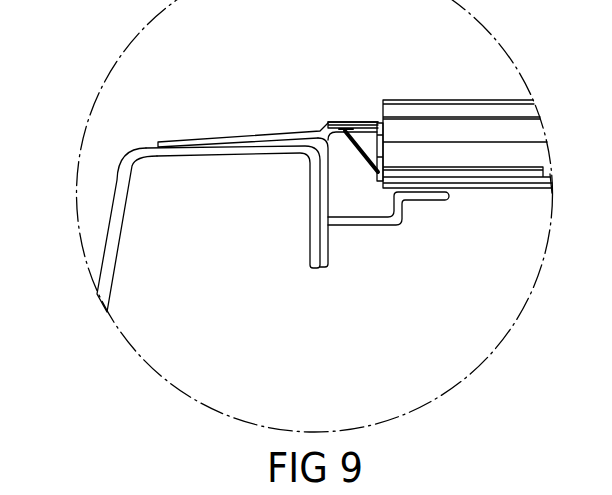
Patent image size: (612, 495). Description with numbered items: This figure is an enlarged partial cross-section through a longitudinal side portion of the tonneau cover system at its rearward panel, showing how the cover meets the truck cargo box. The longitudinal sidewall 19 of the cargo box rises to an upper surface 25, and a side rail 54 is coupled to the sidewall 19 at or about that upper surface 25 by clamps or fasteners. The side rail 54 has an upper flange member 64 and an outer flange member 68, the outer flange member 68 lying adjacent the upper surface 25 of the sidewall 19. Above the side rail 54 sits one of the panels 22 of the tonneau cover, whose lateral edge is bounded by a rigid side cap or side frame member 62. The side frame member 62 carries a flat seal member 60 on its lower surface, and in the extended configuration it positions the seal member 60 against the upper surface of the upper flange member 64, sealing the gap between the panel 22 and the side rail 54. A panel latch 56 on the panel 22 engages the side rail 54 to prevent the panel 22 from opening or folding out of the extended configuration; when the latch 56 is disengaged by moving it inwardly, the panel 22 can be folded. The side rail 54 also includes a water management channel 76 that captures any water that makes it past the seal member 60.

The longitudinal sidewall 19 is at (108, 219).
The panel 22 is at (528, 132).
The upper surface 25 is at (223, 152).
The side rail 54 is at (333, 258).
The panel latch 56 is at (370, 143).
The flat seal member 60 is at (358, 122).
The side frame member 62 is at (330, 122).
The upper flange member 64 is at (330, 128).
The outer flange member 68 is at (240, 135).
The water management channel 76 is at (353, 205).